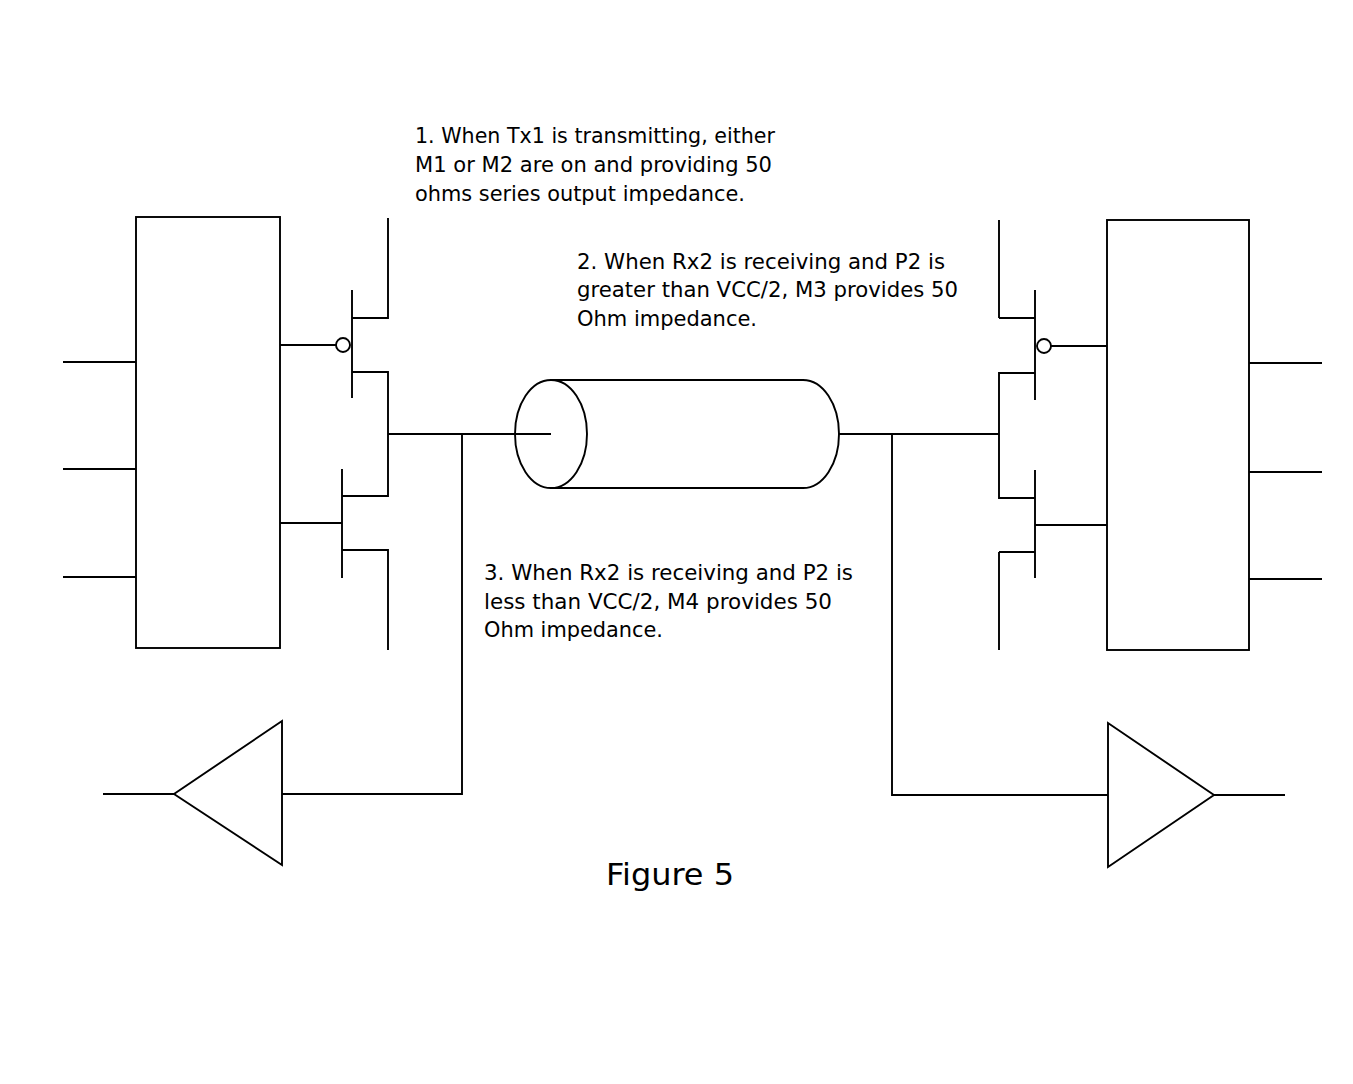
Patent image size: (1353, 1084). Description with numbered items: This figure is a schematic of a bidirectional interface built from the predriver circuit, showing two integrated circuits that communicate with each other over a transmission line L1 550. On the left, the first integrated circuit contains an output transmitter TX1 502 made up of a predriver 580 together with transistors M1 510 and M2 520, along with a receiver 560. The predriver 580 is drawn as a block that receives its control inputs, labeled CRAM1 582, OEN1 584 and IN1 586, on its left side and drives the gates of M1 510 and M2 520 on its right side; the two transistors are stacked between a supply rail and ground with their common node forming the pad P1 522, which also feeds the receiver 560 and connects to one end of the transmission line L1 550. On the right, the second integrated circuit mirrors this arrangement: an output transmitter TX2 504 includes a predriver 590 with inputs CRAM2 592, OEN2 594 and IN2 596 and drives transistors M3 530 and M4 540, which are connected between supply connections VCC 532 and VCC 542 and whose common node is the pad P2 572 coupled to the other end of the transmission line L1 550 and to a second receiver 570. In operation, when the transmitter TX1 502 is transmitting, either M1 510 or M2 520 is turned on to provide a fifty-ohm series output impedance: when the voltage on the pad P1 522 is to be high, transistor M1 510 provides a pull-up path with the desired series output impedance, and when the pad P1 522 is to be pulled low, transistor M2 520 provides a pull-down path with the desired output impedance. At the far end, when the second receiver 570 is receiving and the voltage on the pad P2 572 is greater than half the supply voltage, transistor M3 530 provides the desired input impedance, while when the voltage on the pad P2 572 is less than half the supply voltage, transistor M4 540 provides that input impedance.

The transmitter TX1 502 is at (287, 397).
The transmitter TX2 504 is at (1099, 429).
The transistor M1 510 is at (359, 326).
The transistor M2 520 is at (359, 542).
The transistor M3 530 is at (1028, 362).
The transistor M4 540 is at (1028, 506).
The supply voltage VCC 532 is at (1000, 237).
The supply voltage VCC 542 is at (1008, 636).
The transmission line L1 550 is at (693, 434).
The receiver 560 is at (192, 793).
The second receiver 570 is at (1196, 795).
The pad P1 522 is at (400, 614).
The pad P2 572 is at (1000, 614).
The predriver 580 is at (208, 432).
The predriver 590 is at (1178, 435).
The CRAM1 input 582 is at (95, 327).
The OEN1 input 584 is at (98, 438).
The IN1 input 586 is at (99, 542).
The CRAM2 input 592 is at (1297, 328).
The OEN2 input 594 is at (1294, 440).
The IN2 input 596 is at (1285, 544).